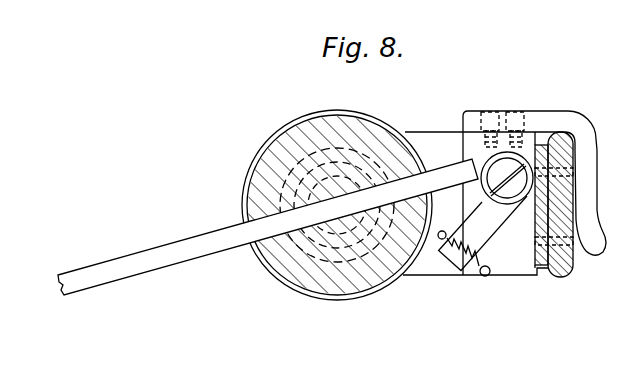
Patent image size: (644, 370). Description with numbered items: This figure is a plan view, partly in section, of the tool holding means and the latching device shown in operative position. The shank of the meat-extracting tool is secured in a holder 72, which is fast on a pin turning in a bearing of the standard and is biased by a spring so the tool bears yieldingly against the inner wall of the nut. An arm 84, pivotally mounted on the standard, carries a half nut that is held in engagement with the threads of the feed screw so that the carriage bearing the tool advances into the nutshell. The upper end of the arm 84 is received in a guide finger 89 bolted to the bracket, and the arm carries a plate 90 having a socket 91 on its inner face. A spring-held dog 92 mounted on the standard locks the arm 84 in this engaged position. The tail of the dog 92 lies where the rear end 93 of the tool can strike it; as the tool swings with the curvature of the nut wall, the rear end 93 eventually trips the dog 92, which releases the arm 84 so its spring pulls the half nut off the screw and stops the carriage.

The holder 72 is at (290, 287).
The arm 84 is at (563, 278).
The guide finger 89 is at (588, 158).
The plate 90 is at (543, 275).
The socket 91 is at (562, 135).
The spring-held dog 92 is at (500, 225).
The rear end of the tool 93 is at (442, 170).